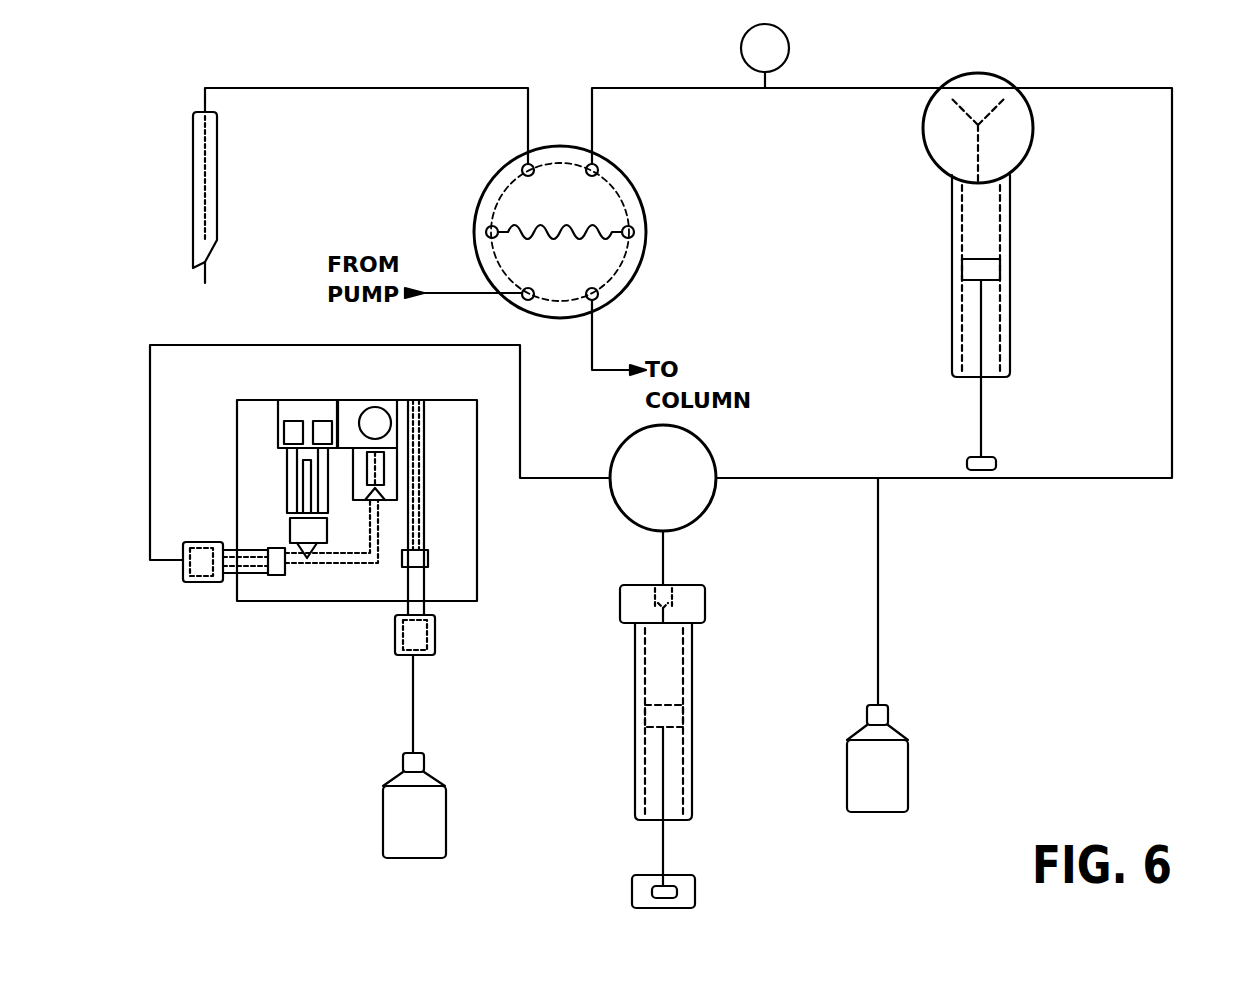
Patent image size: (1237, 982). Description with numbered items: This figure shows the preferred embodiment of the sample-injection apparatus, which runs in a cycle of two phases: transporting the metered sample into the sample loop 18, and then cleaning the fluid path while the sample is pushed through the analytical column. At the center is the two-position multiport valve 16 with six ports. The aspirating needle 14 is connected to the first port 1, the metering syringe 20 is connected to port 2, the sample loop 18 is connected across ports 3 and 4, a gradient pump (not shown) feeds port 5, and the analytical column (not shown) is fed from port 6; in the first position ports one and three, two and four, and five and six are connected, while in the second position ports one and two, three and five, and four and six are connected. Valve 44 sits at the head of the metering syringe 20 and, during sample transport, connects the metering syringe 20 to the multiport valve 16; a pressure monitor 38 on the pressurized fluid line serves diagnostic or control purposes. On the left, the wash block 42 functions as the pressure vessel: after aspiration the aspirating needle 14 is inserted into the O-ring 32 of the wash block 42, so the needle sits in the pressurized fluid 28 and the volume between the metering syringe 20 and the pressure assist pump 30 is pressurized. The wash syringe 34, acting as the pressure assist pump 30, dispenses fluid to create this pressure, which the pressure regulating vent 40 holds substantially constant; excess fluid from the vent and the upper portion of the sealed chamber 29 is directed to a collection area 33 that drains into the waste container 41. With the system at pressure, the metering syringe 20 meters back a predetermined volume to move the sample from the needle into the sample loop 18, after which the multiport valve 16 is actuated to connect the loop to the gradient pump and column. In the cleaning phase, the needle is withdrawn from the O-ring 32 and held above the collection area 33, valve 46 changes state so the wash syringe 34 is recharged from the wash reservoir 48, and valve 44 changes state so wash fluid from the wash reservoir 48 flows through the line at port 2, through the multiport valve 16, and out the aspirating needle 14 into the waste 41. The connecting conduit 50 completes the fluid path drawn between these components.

The first port 1 is at (524, 166).
The port 2 is at (596, 166).
The port 3 is at (486, 232).
The port 4 is at (634, 232).
The port 5 is at (524, 298).
The port 6 is at (596, 298).
The aspirating needle 14 is at (217, 207).
The multiport valve 16 is at (643, 215).
The sample loop 18 is at (566, 240).
The metering syringe 20 is at (1012, 225).
The pressurized fluid 28 is at (380, 479).
The sealed chamber 29 is at (396, 503).
The pressure assist pump 30 is at (632, 746).
The O-ring 32 is at (380, 455).
The collection area 33 is at (277, 430).
The wash syringe 34 is at (633, 660).
The pressure monitor 38 is at (790, 48).
The pressure regulating vent 40 is at (283, 482).
The waste container 41 is at (381, 820).
The wash block 42 is at (363, 500).
The valve 44 is at (1034, 128).
The valve 46 is at (714, 455).
The wash reservoir 48 is at (910, 772).
The conduit 50 is at (1174, 358).